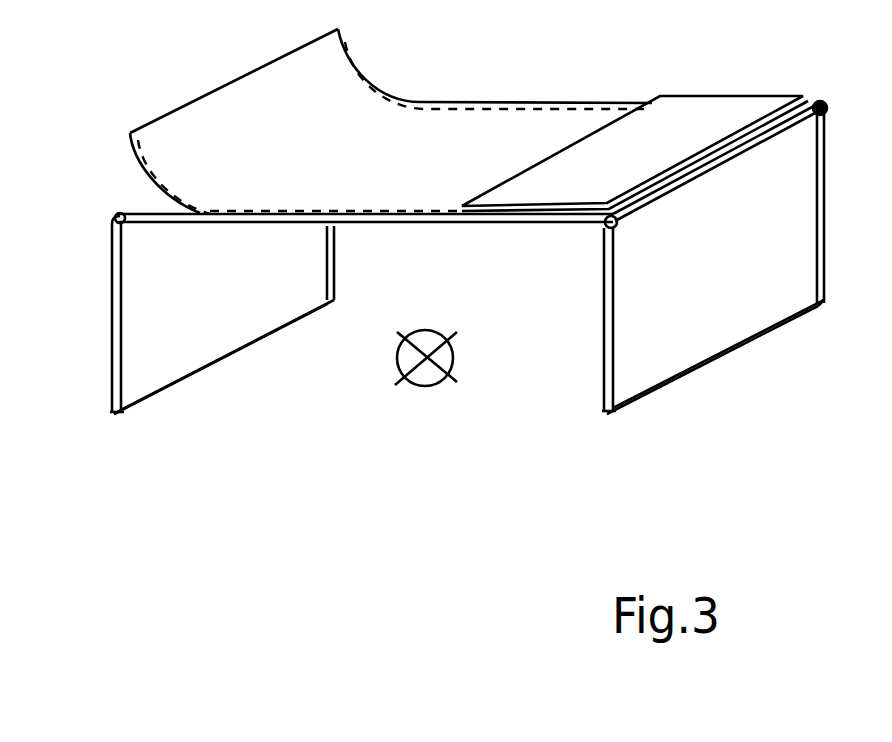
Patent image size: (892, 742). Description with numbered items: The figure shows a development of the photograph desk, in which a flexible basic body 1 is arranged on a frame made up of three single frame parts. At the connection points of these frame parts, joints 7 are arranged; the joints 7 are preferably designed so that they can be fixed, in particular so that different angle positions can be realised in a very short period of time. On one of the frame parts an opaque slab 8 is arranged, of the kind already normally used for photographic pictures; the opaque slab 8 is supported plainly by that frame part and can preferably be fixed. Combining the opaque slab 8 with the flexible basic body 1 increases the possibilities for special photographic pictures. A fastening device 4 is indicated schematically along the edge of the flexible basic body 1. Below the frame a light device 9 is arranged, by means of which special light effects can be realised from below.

The flexible basic body 1 is at (223, 112).
The fastening device 4 is at (503, 110).
The joint 7 is at (824, 100).
The opaque slab 8 is at (681, 120).
The light device 9 is at (403, 365).